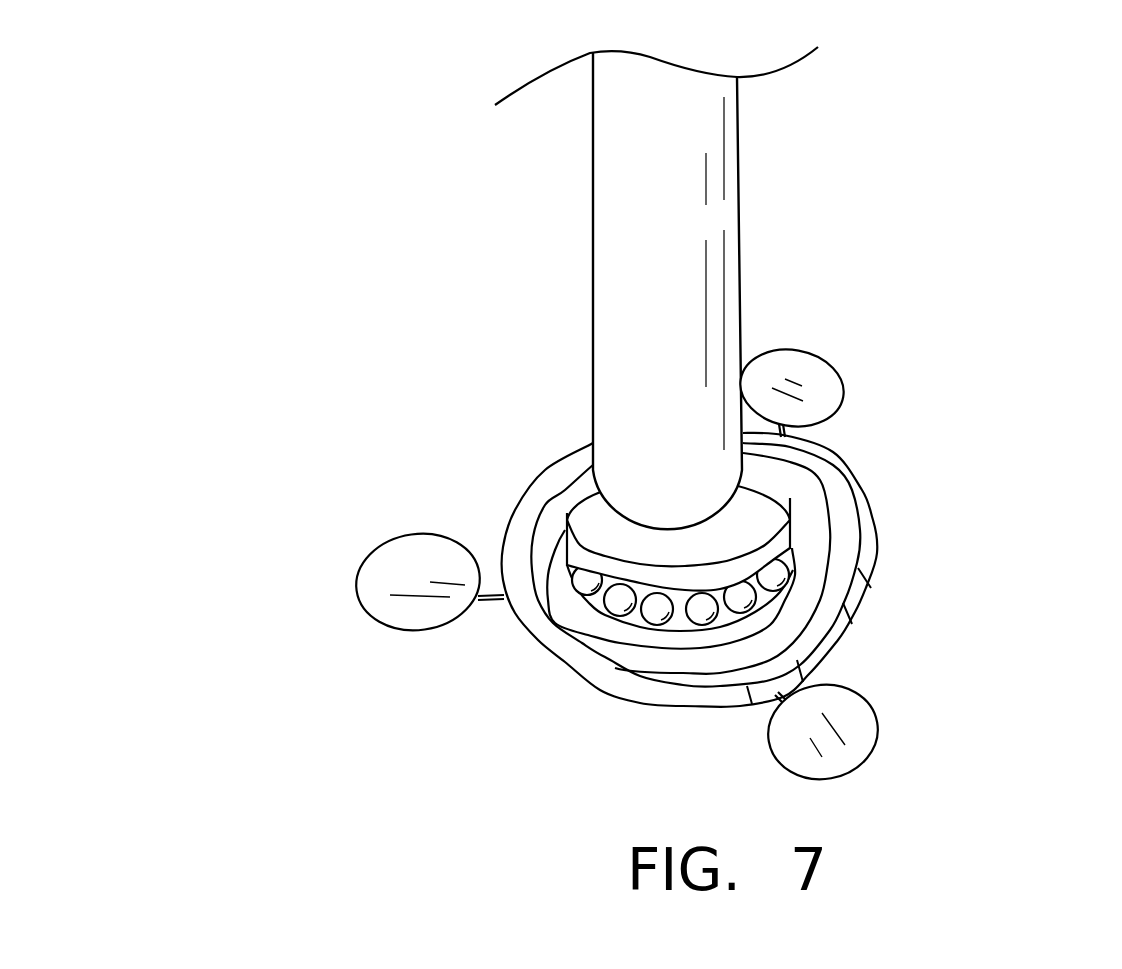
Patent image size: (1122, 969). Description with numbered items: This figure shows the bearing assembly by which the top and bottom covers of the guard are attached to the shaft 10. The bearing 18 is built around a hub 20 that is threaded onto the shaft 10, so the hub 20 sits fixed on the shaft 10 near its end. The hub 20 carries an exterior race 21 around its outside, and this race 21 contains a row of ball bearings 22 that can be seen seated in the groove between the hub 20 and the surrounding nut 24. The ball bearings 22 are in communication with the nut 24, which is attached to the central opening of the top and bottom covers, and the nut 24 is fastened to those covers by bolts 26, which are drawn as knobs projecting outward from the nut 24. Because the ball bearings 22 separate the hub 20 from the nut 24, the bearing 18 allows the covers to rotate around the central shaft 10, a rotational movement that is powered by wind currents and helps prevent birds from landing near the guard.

The shaft 10 is at (688, 233).
The bearing 18 is at (663, 417).
The hub 20 is at (582, 511).
The exterior race 21 is at (603, 622).
The ball bearings 22 is at (790, 545).
The nut 24 is at (843, 562).
The bolts 26 is at (393, 572).